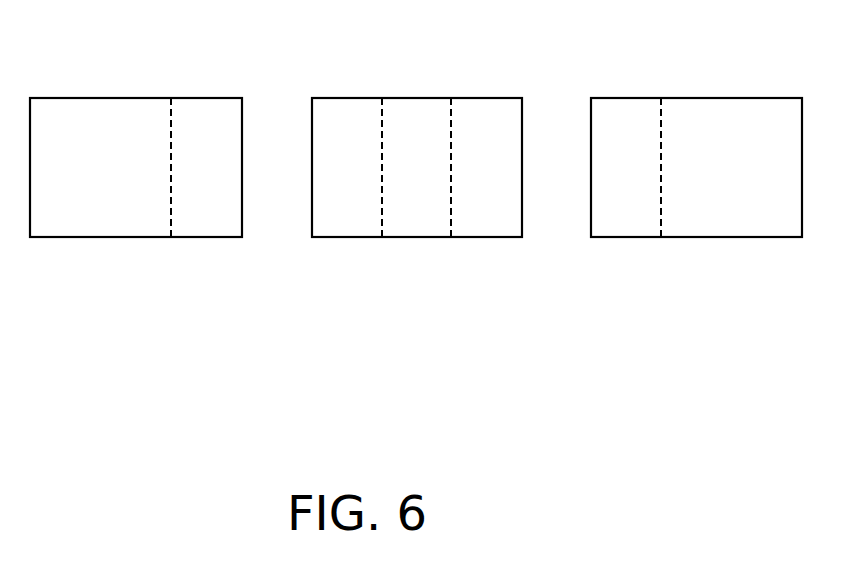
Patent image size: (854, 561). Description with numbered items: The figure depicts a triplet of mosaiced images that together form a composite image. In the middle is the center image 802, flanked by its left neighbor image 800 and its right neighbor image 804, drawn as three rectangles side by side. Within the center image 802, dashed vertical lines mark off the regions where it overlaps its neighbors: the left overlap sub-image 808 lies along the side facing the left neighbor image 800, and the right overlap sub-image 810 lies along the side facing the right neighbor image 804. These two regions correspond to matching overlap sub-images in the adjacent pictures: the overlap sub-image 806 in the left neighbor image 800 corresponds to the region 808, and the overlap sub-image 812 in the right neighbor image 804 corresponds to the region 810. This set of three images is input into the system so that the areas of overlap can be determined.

The left neighbor image 800 is at (136, 237).
The center image 802 is at (415, 237).
The right neighbor image 804 is at (696, 237).
The overlap sub-image in left neighbor image 806 is at (204, 98).
The left overlap sub-image of center image 808 is at (345, 98).
The right overlap sub-image of center image 810 is at (488, 98).
The overlap sub-image in right neighbor image 812 is at (630, 98).